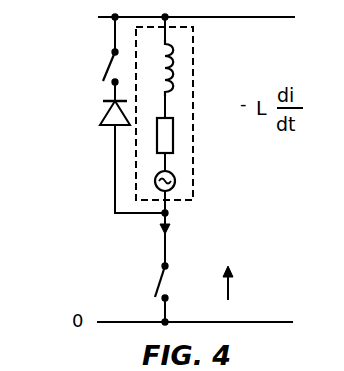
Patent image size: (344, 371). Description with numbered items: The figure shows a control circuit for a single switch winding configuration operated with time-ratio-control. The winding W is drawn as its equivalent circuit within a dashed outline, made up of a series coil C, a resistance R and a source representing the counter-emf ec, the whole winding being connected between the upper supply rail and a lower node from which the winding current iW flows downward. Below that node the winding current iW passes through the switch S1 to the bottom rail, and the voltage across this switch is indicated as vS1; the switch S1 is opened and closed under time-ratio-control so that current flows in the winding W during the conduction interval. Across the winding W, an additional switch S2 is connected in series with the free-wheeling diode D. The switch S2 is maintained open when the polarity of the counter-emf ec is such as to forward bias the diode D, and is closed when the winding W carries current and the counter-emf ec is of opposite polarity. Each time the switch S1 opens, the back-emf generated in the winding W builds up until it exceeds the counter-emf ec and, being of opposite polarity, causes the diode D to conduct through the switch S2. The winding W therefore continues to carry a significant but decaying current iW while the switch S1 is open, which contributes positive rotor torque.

The switch S2 is at (103, 70).
The free-wheeling diode D is at (100, 117).
The winding W is at (193, 114).
The winding inductance (coil) C is at (169, 71).
The winding resistance R is at (175, 136).
The counter-emf ec is at (175, 182).
The winding current iW is at (185, 239).
The switch S1 is at (158, 284).
The voltage across switch S1 vS1 is at (251, 284).